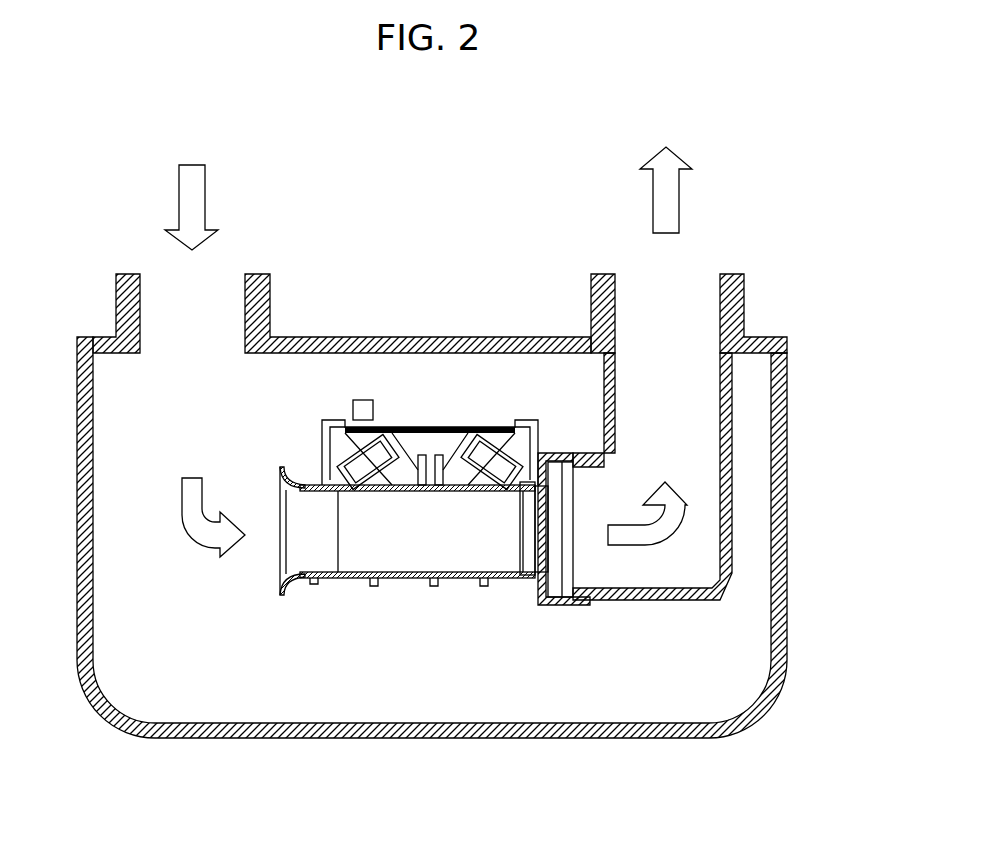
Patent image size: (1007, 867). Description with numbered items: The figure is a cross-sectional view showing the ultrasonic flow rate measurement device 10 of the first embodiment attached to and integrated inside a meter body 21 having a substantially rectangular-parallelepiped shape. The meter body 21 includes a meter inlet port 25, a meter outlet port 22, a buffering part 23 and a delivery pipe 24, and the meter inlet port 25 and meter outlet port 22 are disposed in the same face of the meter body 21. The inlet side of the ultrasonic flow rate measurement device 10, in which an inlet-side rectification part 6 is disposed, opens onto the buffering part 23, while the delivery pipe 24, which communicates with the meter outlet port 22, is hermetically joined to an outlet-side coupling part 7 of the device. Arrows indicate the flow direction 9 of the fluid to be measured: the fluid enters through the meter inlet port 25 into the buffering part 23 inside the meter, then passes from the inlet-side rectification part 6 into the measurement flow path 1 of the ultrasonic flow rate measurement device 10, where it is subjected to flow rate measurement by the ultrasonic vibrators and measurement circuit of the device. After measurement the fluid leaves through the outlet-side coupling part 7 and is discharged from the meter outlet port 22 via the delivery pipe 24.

The measurement flow path 1 is at (403, 538).
The inlet-side rectification part 6 is at (293, 578).
The outlet-side coupling part 7 is at (573, 605).
The flow direction 9 is at (195, 192).
The ultrasonic flow rate measurement device 10 is at (430, 445).
The meter body 21 is at (663, 735).
The meter outlet port 22 is at (744, 293).
The buffering part 23 is at (182, 665).
The delivery pipe 24 is at (730, 558).
The meter inlet port 25 is at (270, 297).